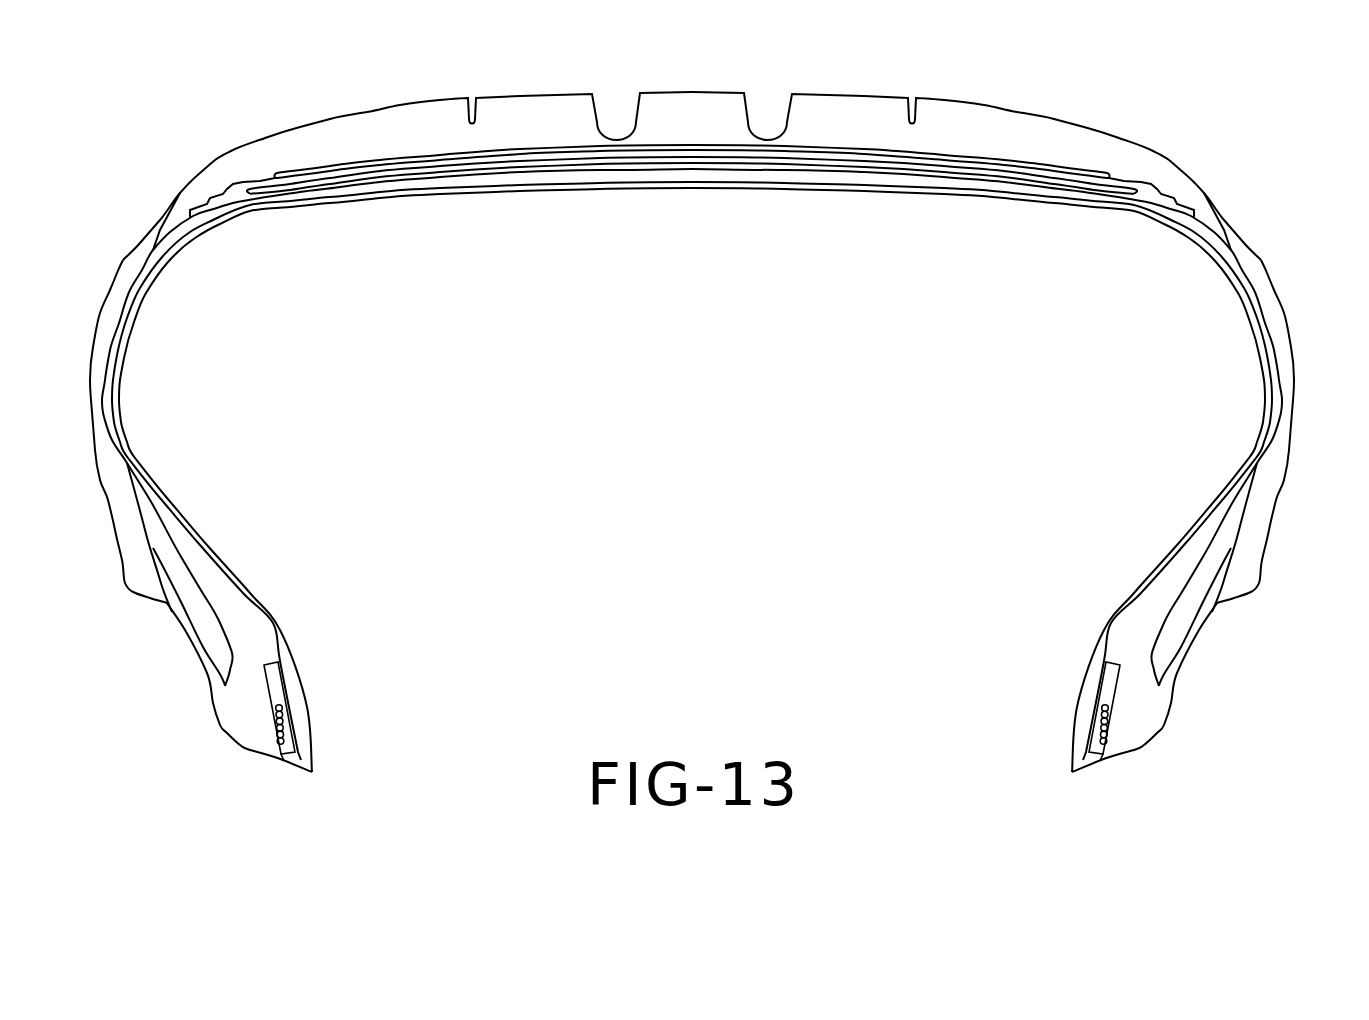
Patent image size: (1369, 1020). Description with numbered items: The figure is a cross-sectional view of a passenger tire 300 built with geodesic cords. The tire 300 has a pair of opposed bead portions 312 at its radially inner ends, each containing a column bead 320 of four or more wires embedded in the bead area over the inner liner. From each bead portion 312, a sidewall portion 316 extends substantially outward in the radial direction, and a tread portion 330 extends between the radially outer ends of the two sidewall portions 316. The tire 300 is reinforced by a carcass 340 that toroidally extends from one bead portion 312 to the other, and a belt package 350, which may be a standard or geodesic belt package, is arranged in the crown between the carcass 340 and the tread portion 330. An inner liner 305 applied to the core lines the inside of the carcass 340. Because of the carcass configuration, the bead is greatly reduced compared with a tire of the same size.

The tire 300 is at (115, 170).
The inner liner 305 is at (714, 183).
The bead portion 312 is at (312, 772).
The sidewall portion 316 is at (1240, 235).
The column bead 320 is at (273, 688).
The tread portion 330 is at (706, 100).
The carcass 340 is at (596, 175).
The belt package 350 is at (830, 153).